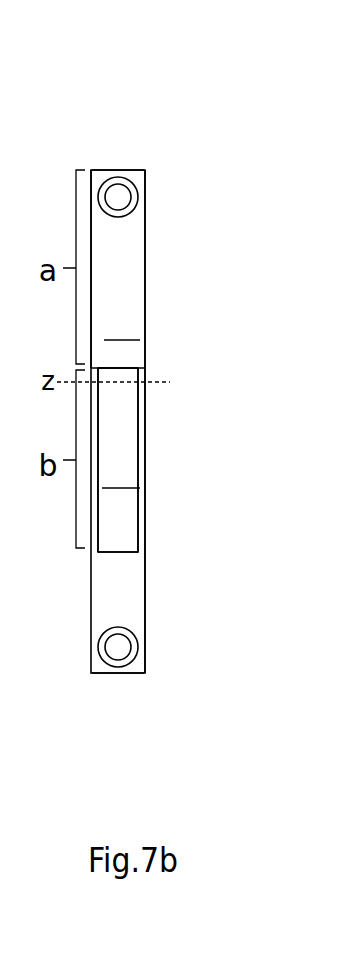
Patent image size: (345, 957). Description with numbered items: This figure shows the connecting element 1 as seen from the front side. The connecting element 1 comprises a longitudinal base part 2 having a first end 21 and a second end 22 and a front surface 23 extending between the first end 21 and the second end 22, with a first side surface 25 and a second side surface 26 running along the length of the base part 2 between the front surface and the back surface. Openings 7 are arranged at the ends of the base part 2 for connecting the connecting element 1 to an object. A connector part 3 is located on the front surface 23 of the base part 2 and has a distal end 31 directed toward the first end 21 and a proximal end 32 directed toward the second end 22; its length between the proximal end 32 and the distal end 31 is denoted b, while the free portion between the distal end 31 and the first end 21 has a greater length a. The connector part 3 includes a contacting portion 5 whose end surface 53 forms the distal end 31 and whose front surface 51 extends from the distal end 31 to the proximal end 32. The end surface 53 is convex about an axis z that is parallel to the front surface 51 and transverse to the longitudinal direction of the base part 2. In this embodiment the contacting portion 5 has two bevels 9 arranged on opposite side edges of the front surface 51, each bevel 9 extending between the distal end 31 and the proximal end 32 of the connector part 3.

The connecting element 1 is at (119, 142).
The base part 2 is at (130, 278).
The connector part 3 is at (156, 513).
The contacting portion 5 is at (145, 393).
The openings 7 is at (122, 200).
The bevel 9 is at (142, 427).
The first end 21 is at (115, 166).
The second end 22 is at (122, 675).
The front surface 23 is at (122, 324).
The first side surface 25 is at (90, 313).
The second side surface 26 is at (145, 300).
The distal end 31 is at (126, 368).
The proximal end 32 is at (120, 553).
The front surface 51 is at (120, 470).
The end surface 53 is at (145, 357).